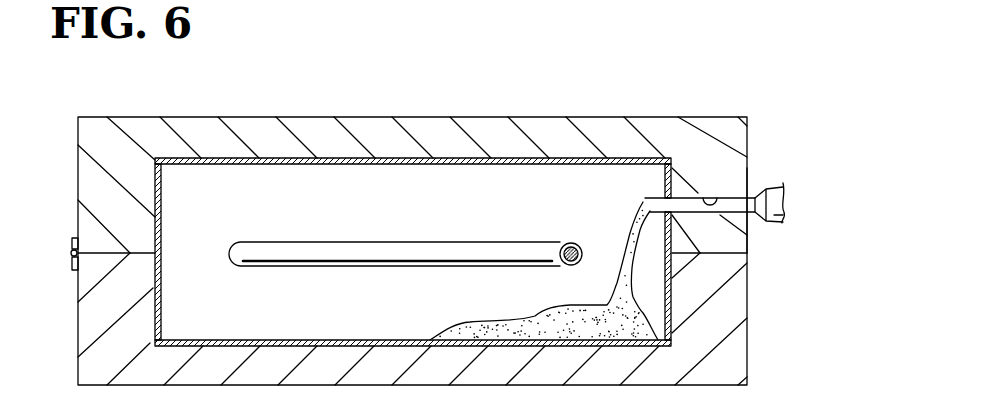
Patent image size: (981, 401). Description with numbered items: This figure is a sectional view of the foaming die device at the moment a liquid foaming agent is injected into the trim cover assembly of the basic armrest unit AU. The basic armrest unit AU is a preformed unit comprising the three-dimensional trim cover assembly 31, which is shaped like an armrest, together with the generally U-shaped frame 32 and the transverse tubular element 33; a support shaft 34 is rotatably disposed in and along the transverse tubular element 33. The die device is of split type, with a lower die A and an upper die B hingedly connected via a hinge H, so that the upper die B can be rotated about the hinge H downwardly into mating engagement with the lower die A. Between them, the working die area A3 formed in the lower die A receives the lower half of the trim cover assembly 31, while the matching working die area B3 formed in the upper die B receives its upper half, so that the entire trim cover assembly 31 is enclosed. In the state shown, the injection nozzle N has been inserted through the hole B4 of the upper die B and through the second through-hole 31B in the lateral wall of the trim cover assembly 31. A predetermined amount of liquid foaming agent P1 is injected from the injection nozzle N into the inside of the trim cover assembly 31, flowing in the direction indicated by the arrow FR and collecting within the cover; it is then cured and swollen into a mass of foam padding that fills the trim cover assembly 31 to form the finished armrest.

The basic armrest unit AU is at (168, 141).
The lower die A is at (742, 358).
The working die area A3 is at (229, 338).
The upper die B is at (485, 130).
The working die area B3 is at (305, 172).
The hole B4 is at (727, 193).
The hinge H is at (73, 243).
The injection nozzle N is at (783, 218).
The trim cover assembly 31 is at (222, 158).
The second through-hole 31B is at (663, 197).
The frame 32 is at (385, 243).
The transverse tubular element 33 is at (560, 250).
The support shaft 34 is at (578, 244).
The flow direction FR is at (256, 227).
The liquid foaming agent P1 is at (470, 323).